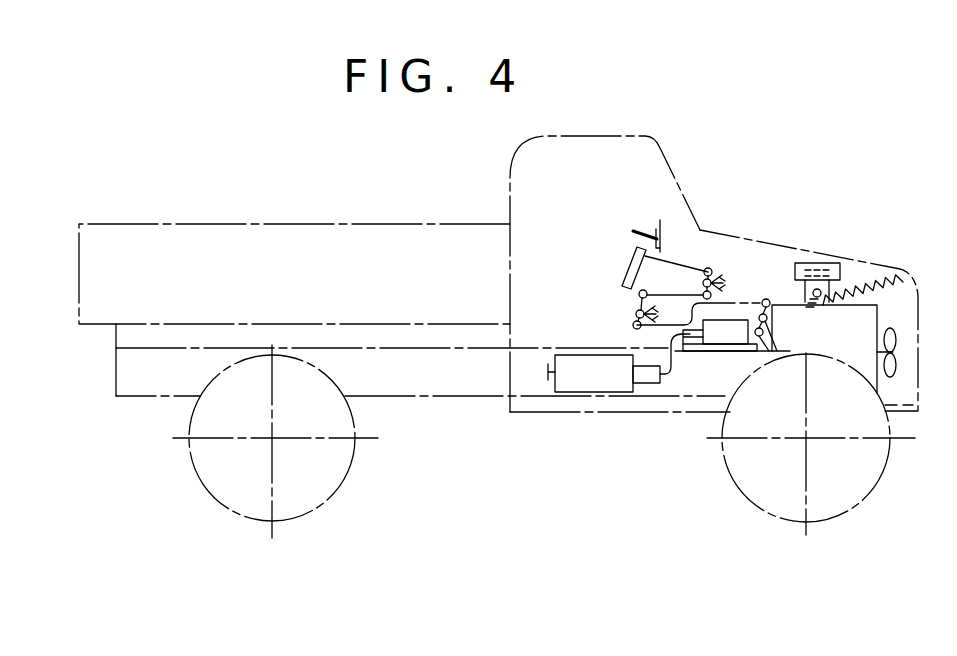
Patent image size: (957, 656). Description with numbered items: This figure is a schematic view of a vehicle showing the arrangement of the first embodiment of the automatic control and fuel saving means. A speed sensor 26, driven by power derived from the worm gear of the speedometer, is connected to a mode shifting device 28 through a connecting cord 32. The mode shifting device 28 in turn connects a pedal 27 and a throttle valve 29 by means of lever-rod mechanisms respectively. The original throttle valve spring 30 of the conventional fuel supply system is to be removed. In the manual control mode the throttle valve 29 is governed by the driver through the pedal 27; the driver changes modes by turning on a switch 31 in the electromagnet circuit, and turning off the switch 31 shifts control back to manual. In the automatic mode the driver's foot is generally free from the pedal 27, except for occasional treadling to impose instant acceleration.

The speed sensor 26 is at (575, 362).
The pedal 27 is at (636, 268).
The mode shifting device 28 is at (730, 335).
The throttle valve 29 is at (807, 302).
The throttle valve spring 30 is at (873, 282).
The switch 31 is at (663, 240).
The connecting cord 32 is at (668, 352).